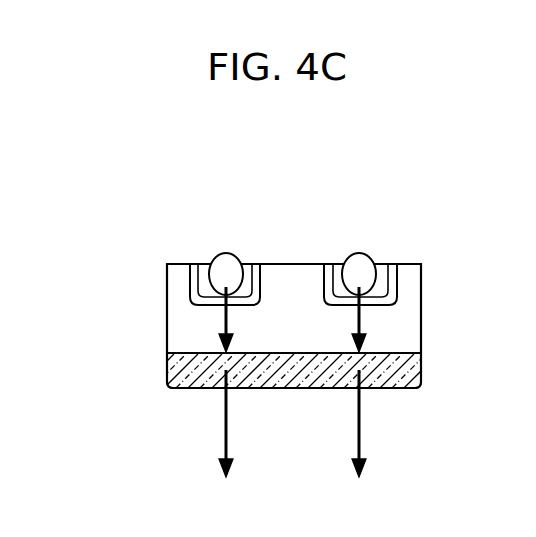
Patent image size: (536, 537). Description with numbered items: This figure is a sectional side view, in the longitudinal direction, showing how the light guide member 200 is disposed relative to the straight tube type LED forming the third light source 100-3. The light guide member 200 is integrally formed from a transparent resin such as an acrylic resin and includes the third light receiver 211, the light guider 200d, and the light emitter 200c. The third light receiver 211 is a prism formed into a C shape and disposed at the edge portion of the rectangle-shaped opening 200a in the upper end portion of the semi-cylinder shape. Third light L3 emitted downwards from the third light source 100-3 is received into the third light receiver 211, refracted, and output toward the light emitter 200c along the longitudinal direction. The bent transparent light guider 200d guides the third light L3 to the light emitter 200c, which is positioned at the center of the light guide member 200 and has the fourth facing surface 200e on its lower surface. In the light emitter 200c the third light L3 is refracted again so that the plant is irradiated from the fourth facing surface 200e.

The third light source 100-3 is at (227, 265).
The light guide member 200 is at (132, 397).
The rectangle-shaped opening 200a is at (203, 277).
The third light receiver 211 is at (190, 303).
The light guider 200d is at (181, 333).
The light emitter 200c is at (183, 389).
The fourth facing surface 200e is at (397, 389).
The third light L3 is at (355, 312).